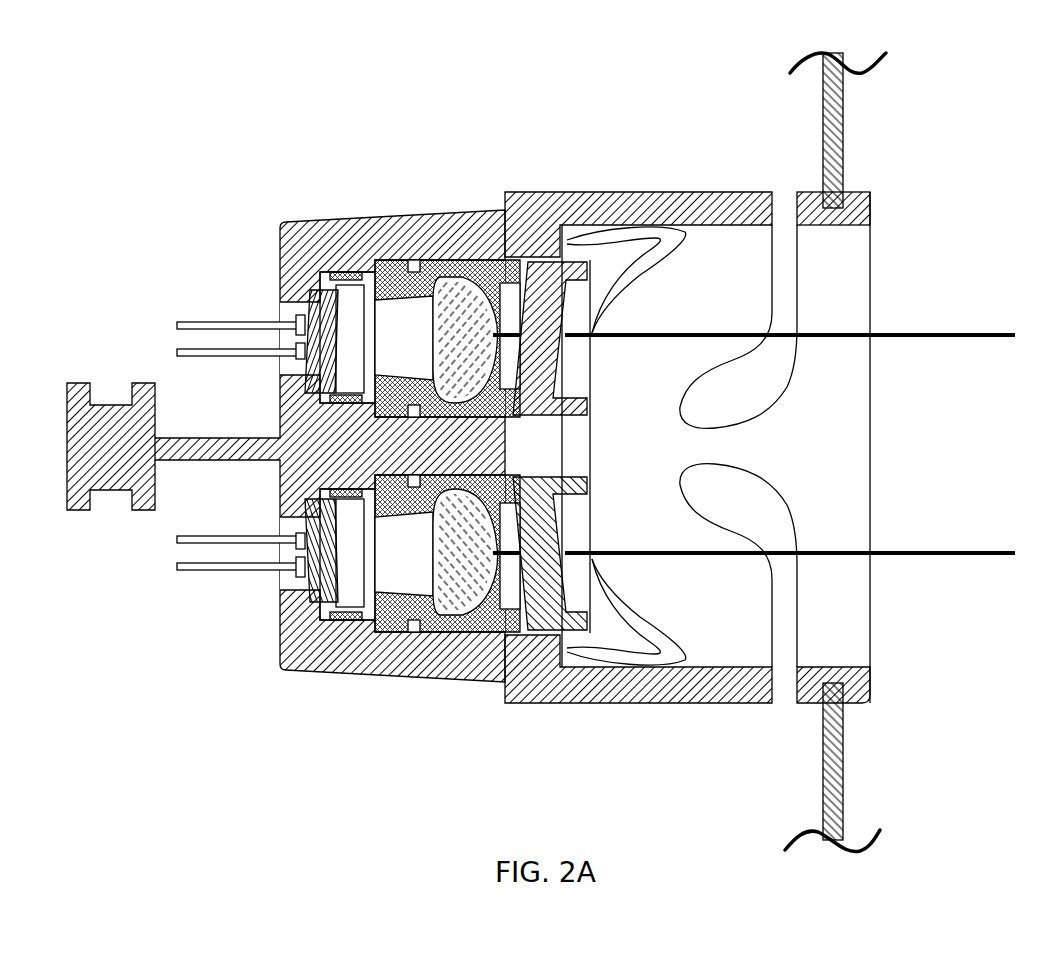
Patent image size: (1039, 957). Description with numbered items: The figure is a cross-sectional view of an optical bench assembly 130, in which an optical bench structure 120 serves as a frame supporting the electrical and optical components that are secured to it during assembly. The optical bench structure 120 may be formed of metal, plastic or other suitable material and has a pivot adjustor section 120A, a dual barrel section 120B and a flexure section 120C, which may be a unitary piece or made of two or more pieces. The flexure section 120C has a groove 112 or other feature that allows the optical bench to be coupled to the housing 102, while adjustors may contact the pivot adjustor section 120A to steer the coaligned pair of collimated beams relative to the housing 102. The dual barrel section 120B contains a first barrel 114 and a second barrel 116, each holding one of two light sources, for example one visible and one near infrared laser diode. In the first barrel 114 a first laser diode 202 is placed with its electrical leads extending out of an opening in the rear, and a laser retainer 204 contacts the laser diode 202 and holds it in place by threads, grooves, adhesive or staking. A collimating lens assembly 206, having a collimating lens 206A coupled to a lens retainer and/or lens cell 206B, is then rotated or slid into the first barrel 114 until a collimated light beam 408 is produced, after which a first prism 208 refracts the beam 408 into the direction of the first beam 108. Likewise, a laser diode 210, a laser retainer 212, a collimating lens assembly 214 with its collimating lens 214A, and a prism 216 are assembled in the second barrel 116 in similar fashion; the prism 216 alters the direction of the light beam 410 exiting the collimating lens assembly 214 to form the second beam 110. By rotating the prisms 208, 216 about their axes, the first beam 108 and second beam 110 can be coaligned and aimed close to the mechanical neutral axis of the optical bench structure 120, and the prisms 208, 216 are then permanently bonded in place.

The housing 102 is at (845, 147).
The first beam 108 is at (976, 338).
The second beam 110 is at (975, 548).
The groove 112 is at (848, 200).
The first barrel 114 is at (627, 300).
The second barrel 116 is at (627, 580).
The optical bench structure 120 is at (636, 190).
The pivot adjustor section 120A is at (97, 535).
The dual barrel section 120B is at (437, 760).
The flexure section 120C is at (695, 720).
The optical bench assembly 130 is at (118, 210).
The first laser diode 202 is at (282, 228).
The laser retainer 204 is at (336, 270).
The collimating lens assembly 206 is at (412, 238).
The collimating lens 206A is at (457, 273).
The lens retainer and/or lens cell 206B is at (490, 270).
The first prism 208 is at (540, 268).
The laser diode 210 is at (303, 603).
The laser retainer 212 is at (341, 622).
The collimating lens assembly 214 is at (387, 650).
The collimating lens 214A is at (450, 613).
The prism 216 is at (530, 627).
The light beam 408 is at (506, 262).
The light beam 410 is at (500, 607).